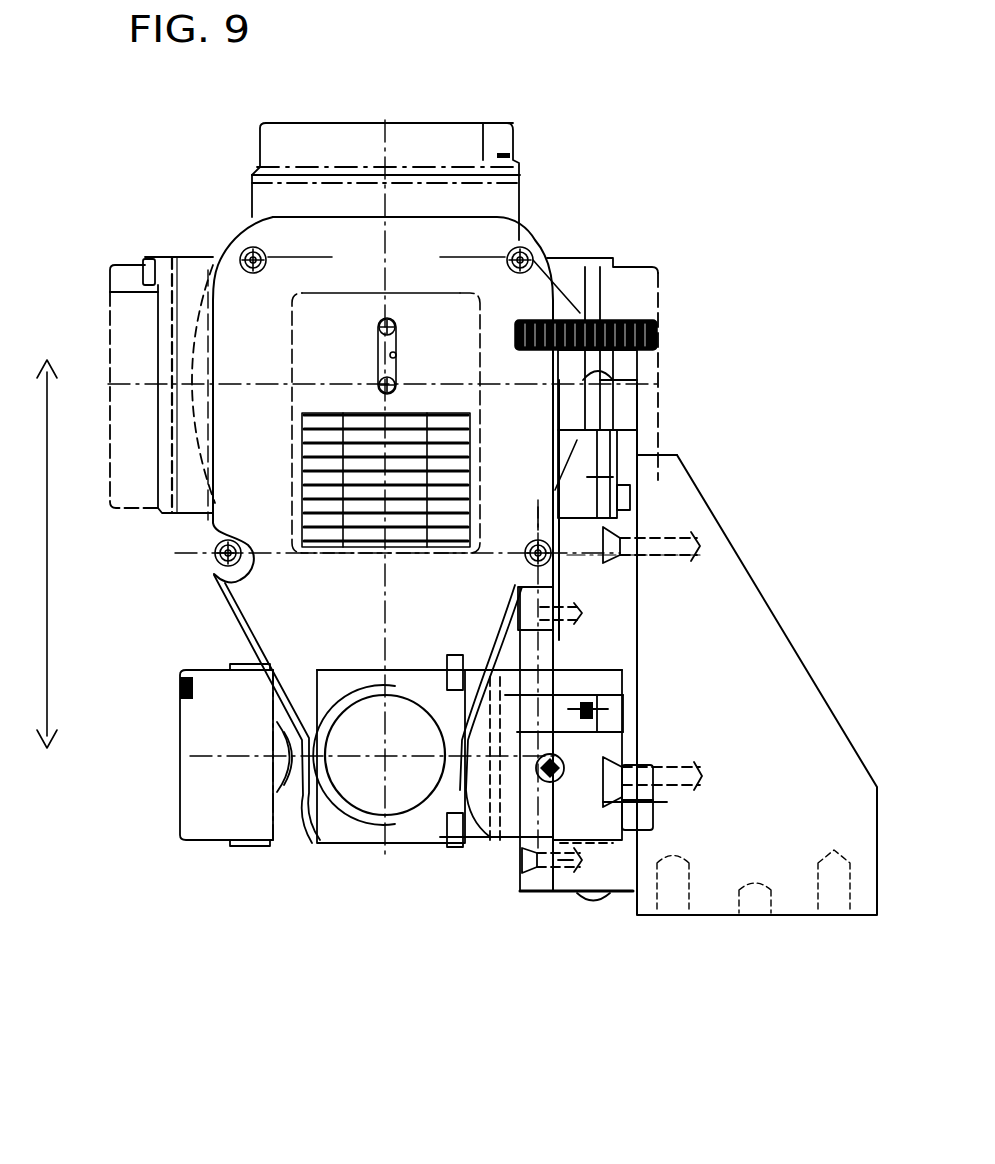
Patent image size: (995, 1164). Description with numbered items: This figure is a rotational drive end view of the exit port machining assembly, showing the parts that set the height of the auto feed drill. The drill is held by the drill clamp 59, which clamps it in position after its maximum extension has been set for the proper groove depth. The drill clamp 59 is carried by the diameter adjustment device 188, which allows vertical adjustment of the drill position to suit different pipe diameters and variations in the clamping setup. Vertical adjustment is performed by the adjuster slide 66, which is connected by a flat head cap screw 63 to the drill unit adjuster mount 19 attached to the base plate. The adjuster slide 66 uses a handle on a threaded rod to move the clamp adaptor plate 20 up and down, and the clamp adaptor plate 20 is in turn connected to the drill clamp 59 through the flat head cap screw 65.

The drill unit adjuster mount 19 is at (765, 584).
The clamp adaptor plate 20 is at (510, 890).
The drill clamp 59 is at (310, 796).
The flat head cap screw 63 is at (606, 560).
The flat head cap screw 65 is at (575, 608).
The adjuster slide 66 is at (637, 310).
The diameter adjustment device 188 is at (693, 1015).